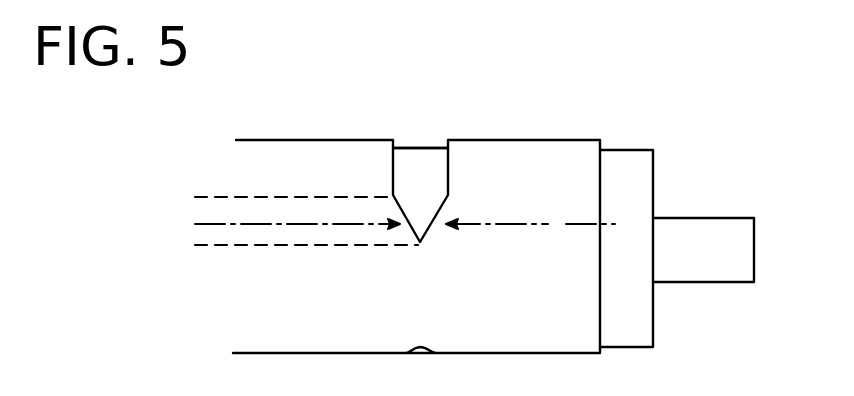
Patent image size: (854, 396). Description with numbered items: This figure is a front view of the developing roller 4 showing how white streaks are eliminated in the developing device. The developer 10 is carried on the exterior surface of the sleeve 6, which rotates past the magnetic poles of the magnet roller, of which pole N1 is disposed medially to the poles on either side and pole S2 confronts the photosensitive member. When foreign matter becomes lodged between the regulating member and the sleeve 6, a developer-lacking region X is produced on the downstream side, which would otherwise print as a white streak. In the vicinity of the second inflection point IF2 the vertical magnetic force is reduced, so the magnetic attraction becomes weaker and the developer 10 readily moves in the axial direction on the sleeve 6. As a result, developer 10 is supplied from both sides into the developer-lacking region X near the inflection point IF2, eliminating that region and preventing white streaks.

The developer 10 is at (545, 141).
The developing roller 4 is at (662, 157).
The sleeve 6 is at (625, 195).
The developer-lacking region X is at (427, 165).
The second inflection point IF2 is at (553, 233).
The magnetic pole N1 is at (294, 178).
The magnetic pole S2 is at (306, 266).